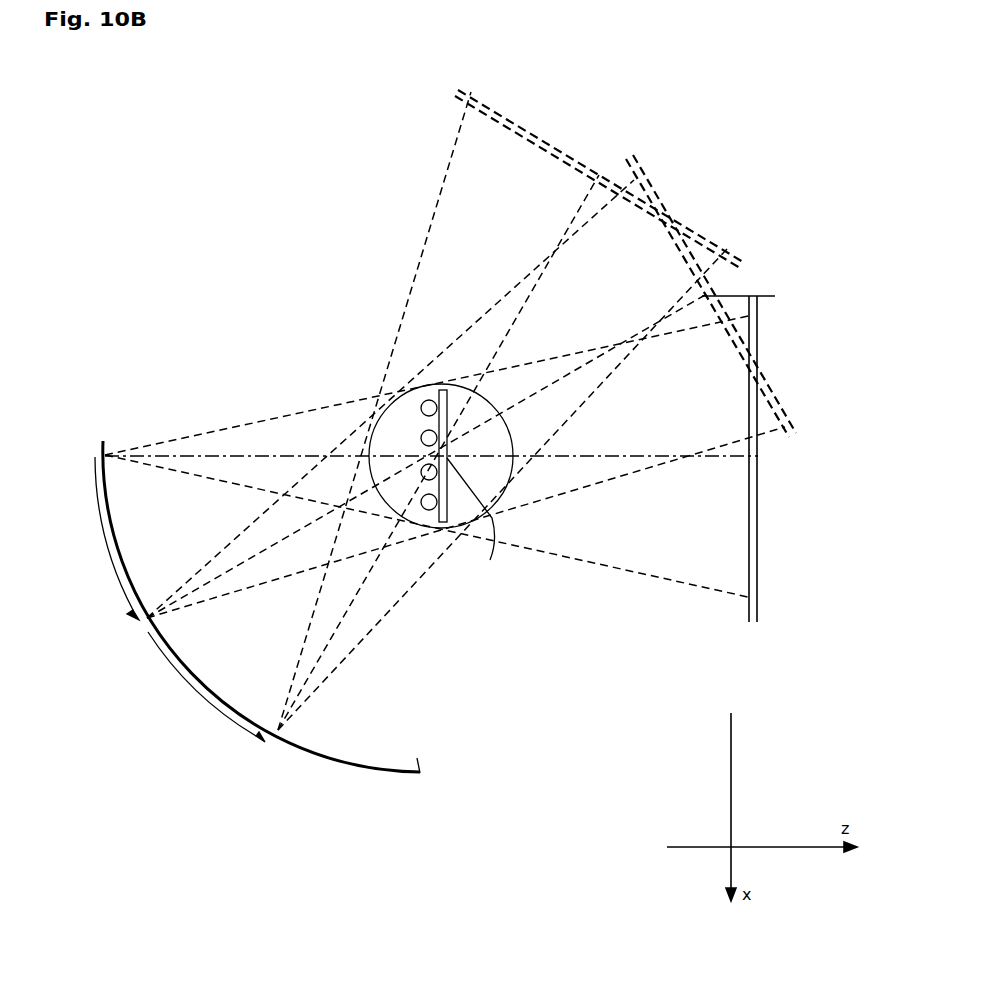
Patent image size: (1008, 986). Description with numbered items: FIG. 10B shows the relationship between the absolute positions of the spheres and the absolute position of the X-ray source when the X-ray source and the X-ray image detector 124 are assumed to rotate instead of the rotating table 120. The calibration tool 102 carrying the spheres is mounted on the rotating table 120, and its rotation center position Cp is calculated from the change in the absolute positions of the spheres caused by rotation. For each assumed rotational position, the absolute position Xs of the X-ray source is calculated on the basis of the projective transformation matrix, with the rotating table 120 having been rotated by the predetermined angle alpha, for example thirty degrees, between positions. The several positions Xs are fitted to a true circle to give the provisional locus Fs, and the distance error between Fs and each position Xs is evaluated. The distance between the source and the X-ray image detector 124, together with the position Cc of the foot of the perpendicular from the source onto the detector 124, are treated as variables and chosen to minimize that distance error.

The calibration tool 102 is at (404, 395).
The rotating table 120 is at (398, 432).
The X-ray image detector 124 is at (498, 113).
The position of the foot of the perpendicular Cc is at (628, 160).
The rotation center position Cp is at (476, 524).
The absolute position of the X-ray source Xs is at (106, 443).
The locus of the absolute positions of the X-ray source Fs is at (416, 770).
The predetermined angle alpha is at (173, 599).